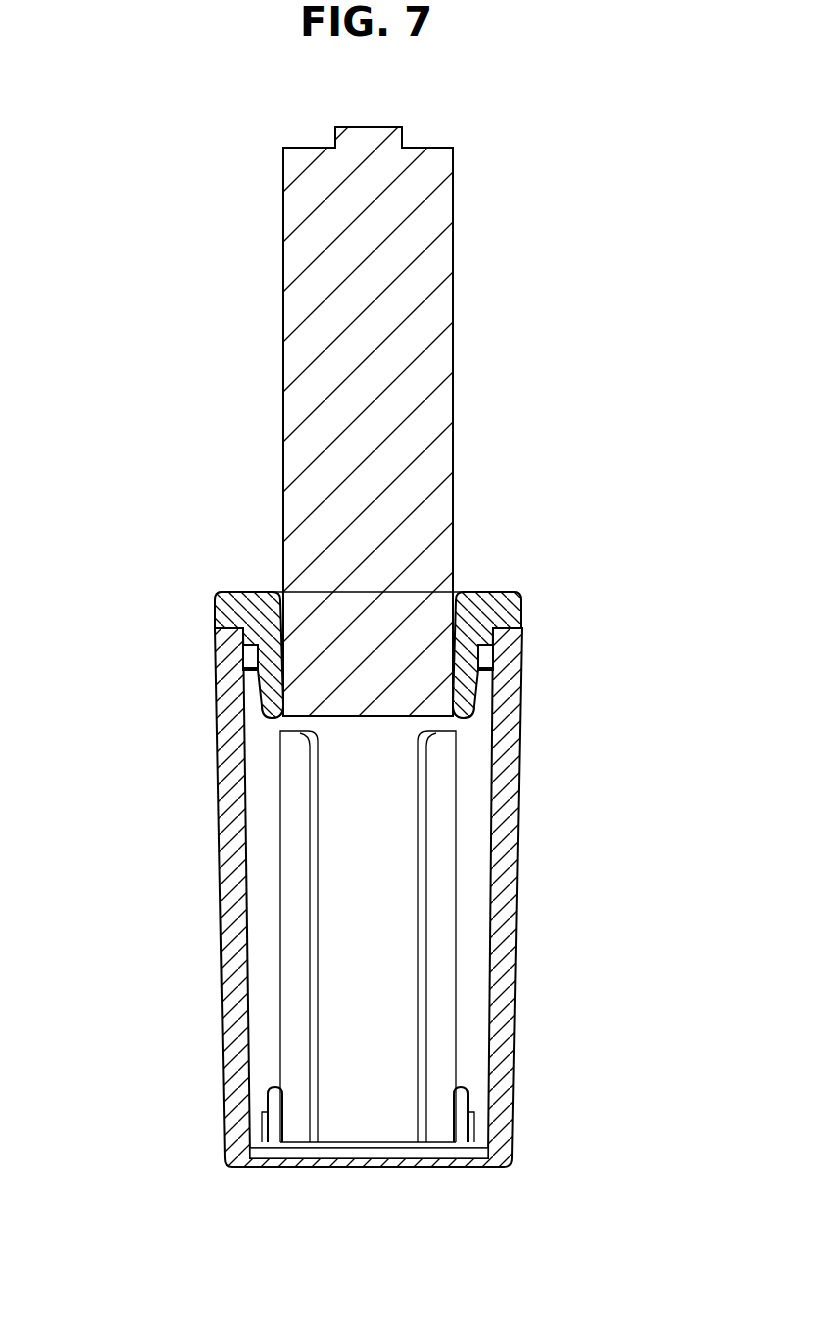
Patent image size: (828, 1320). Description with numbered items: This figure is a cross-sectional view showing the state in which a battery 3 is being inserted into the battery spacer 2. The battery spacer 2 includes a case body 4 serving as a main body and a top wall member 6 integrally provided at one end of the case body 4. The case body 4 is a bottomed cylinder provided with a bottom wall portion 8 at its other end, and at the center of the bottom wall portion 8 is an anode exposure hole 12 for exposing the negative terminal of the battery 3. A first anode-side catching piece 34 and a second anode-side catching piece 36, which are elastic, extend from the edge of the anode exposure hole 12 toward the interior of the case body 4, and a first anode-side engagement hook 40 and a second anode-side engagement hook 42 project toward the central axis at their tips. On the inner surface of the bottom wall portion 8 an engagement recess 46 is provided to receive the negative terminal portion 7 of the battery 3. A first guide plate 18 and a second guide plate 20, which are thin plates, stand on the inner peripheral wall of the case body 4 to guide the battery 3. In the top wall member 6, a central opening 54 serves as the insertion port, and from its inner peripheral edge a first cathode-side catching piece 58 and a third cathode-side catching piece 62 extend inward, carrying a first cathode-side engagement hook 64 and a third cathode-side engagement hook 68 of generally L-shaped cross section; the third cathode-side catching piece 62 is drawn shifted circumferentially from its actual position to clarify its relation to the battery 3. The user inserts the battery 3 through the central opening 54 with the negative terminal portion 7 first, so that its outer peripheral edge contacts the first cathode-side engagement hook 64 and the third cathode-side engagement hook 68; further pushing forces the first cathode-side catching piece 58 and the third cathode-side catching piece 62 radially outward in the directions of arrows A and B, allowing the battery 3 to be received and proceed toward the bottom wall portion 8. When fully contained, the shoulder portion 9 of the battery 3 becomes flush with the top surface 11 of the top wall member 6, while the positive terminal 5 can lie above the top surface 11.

The battery spacer 2 is at (527, 589).
The battery 3 is at (453, 190).
The case body 4 is at (223, 985).
The positive terminal 5 is at (364, 127).
The top wall member 6 is at (225, 592).
The negative terminal portion 7 is at (358, 718).
The bottom wall portion 8 is at (468, 1170).
The shoulder portion 9 is at (424, 148).
The top surface 11 is at (500, 592).
The anode exposure hole 12 is at (282, 1167).
The first guide plate 18 is at (292, 800).
The second guide plate 20 is at (446, 800).
The first anode-side catching piece 34 is at (262, 1115).
The second anode-side catching piece 36 is at (474, 1115).
The first anode-side engagement hook 40 is at (281, 1088).
The second anode-side engagement hook 42 is at (455, 1088).
The engagement recess 46 is at (400, 1160).
The central opening 54 is at (436, 600).
The first cathode-side catching piece 58 is at (495, 667).
The third cathode-side catching piece 62 is at (242, 667).
The first cathode-side engagement hook 64 is at (466, 722).
The third cathode-side engagement hook 68 is at (272, 722).
The arrow A is at (488, 712).
The arrow B is at (250, 712).